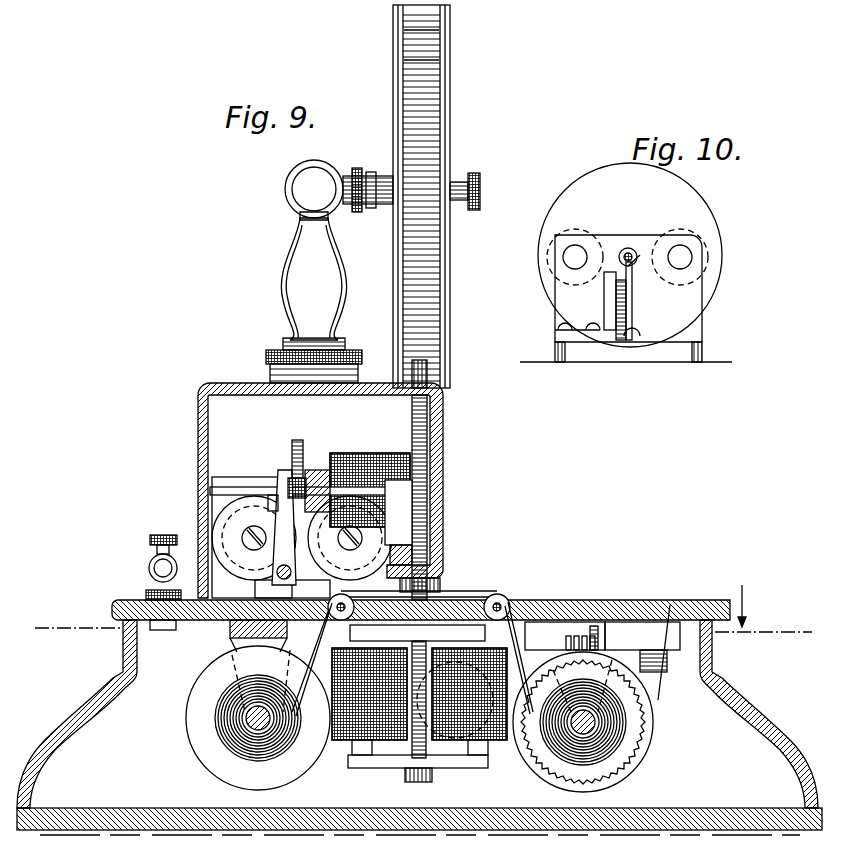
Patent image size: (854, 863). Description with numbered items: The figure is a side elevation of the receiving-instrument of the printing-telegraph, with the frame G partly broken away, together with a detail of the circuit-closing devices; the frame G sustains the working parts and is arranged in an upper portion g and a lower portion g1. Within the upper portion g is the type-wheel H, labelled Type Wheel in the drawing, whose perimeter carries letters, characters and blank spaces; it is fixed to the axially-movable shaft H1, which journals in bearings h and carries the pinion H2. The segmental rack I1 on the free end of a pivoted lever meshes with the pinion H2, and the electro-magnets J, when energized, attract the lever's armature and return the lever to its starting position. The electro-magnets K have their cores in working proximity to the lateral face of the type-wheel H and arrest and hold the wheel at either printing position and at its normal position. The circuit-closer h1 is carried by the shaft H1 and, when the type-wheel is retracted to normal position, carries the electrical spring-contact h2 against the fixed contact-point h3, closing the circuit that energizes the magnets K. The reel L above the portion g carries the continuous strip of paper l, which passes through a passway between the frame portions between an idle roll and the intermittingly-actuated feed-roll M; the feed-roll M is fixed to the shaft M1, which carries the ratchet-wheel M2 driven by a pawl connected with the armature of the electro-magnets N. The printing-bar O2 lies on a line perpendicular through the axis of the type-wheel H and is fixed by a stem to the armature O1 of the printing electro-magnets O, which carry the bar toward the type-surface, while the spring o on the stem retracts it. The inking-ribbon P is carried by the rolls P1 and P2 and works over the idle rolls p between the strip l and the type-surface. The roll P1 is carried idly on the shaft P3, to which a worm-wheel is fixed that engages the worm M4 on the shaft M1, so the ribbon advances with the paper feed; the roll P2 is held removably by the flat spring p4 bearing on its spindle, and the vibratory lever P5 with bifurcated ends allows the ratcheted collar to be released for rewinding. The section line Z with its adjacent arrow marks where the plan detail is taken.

In FIG. 9, the reel L is at (443, 152).
In FIG. 9, the continuous strip of paper l is at (446, 383).
In FIG. 9, the upper portion of the frame g is at (205, 437).
In FIG. 9, the lower portion of the frame g1 is at (768, 745).
In FIG. 9, the frame G is at (443, 497).
In FIG. 9, the type-wheel H is at (412, 437).
In FIG. 10, the type-wheel H is at (630, 255).
In FIG. 9, the axially-movable shaft H1 is at (262, 491).
In FIG. 10, the axially-movable shaft H1 is at (649, 252).
In FIG. 9, the pinion H2 is at (290, 480).
In FIG. 10, the pinion H2 is at (630, 248).
In FIG. 9, the bearings h is at (358, 504).
In FIG. 9, the circuit-closer h1 is at (279, 495).
In FIG. 10, the circuit-closer h1 is at (635, 284).
In FIG. 9, the electrical spring-contact h2 is at (280, 527).
In FIG. 10, the electrical spring-contact h2 is at (634, 312).
In FIG. 10, the fixed contact-point h3 is at (606, 292).
In FIG. 9, the segmental rack I1 is at (296, 448).
In FIG. 9, the electro-magnets J is at (302, 537).
In FIG. 9, the electro-magnets K is at (370, 490).
In FIG. 10, the electro-magnets K is at (627, 250).
In FIG. 9, the printing electro-magnets O is at (419, 694).
In FIG. 9, the armature O1 is at (450, 766).
In FIG. 9, the printing-bar O2 is at (440, 596).
In FIG. 9, the spring o is at (426, 748).
In FIG. 9, the inking-ribbon P is at (486, 594).
In FIG. 9, the idle rolls p is at (512, 605).
In FIG. 9, the ribbon roll P1 is at (636, 770).
In FIG. 9, the ribbon roll P2 is at (230, 688).
In FIG. 9, the shaft P3 is at (596, 722).
In FIG. 9, the flat spring p4 is at (234, 654).
In FIG. 9, the vibratory lever P5 is at (248, 722).
In FIG. 9, the electro-magnets N is at (552, 642).
In FIG. 9, the feed-roll M is at (643, 656).
In FIG. 9, the shaft M1 is at (642, 634).
In FIG. 9, the ratchet-wheel M2 is at (545, 620).
In FIG. 9, the worm M4 is at (585, 636).
In FIG. 9, the section line Z Z is at (421, 613).
In FIG. 9, the type wheel handle Type is at (432, 432).